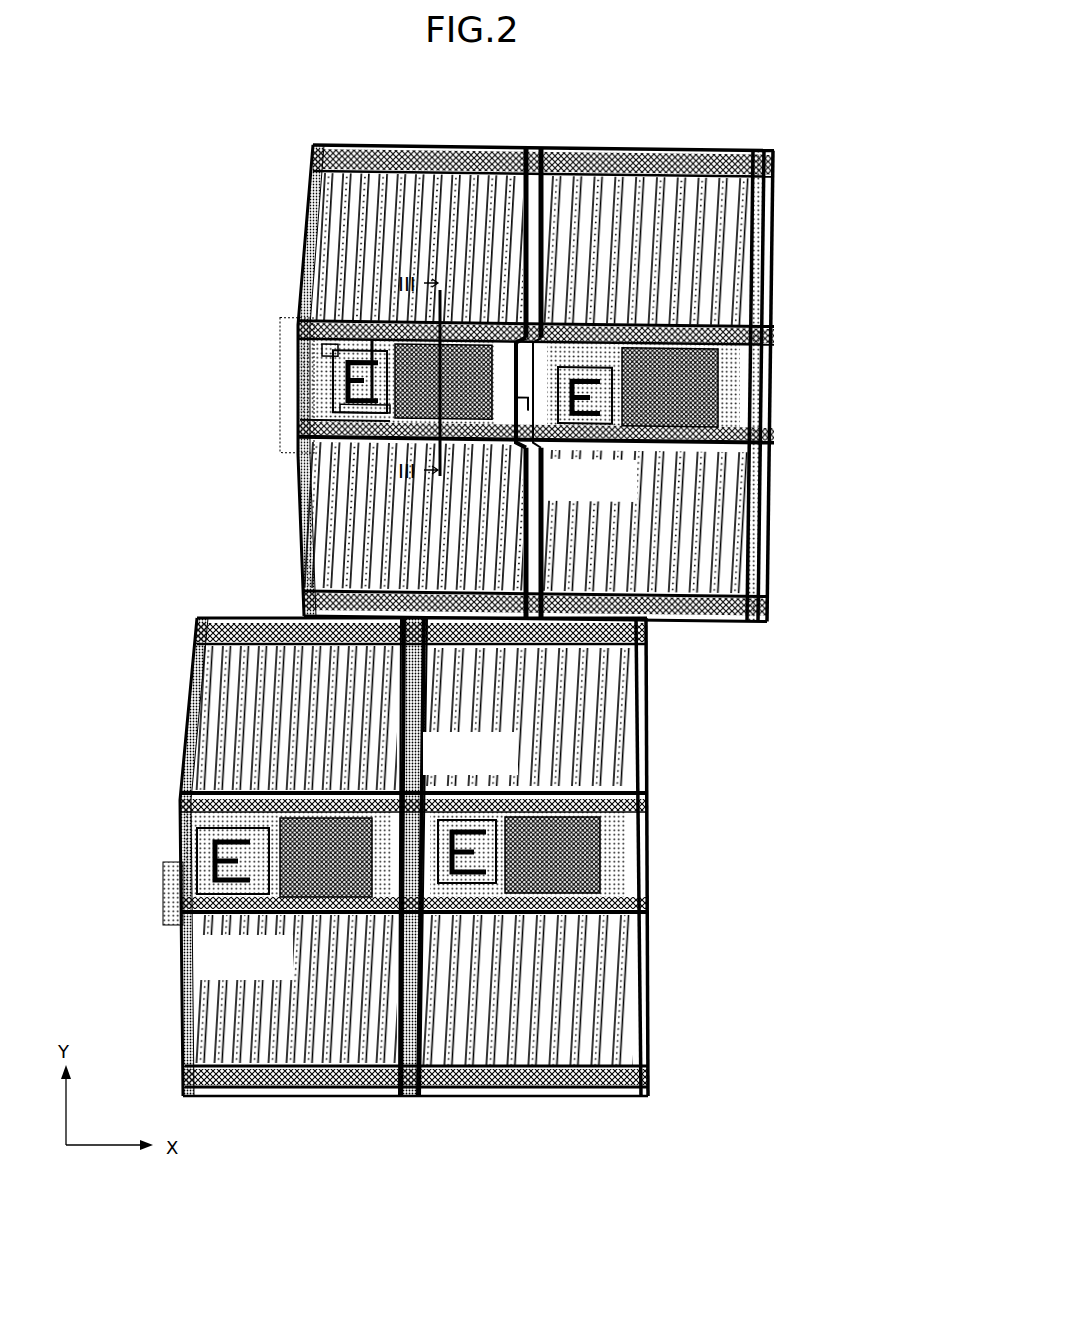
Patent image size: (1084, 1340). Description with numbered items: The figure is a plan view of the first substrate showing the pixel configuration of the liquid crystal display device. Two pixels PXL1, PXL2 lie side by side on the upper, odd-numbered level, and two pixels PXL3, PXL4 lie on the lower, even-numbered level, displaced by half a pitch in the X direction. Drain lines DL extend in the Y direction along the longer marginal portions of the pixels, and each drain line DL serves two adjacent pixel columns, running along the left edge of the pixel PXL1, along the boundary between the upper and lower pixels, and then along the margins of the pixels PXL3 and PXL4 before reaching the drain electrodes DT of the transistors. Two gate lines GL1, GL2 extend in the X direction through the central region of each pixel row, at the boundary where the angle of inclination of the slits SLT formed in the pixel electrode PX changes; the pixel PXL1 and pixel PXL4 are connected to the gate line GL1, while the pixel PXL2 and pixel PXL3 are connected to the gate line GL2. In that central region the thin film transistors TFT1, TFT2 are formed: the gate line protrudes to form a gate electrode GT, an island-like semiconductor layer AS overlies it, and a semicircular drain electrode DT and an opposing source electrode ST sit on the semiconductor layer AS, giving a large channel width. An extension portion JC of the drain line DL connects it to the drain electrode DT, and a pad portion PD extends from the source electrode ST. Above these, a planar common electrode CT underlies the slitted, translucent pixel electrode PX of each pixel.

The source electrode ST is at (372, 345).
The gate line GL1 is at (398, 335).
The gate line GL2 is at (755, 430).
The pixel PXL1 is at (484, 144).
The pixel PXL2 is at (693, 333).
The pixel PXL3 is at (309, 1098).
The pixel PXL4 is at (522, 1098).
The slit SLT is at (723, 207).
The pixel electrode PX is at (718, 236).
The common electrode CT is at (762, 273).
The pad portion PD is at (722, 399).
The extension portion JC is at (325, 350).
The semiconductor layer AS is at (340, 393).
The thin film transistor TFT1 is at (300, 404).
The thin film transistor TFT2 is at (408, 724).
The gate electrode GT is at (345, 418).
The drain electrode DT is at (345, 436).
The drain line DL is at (300, 512).